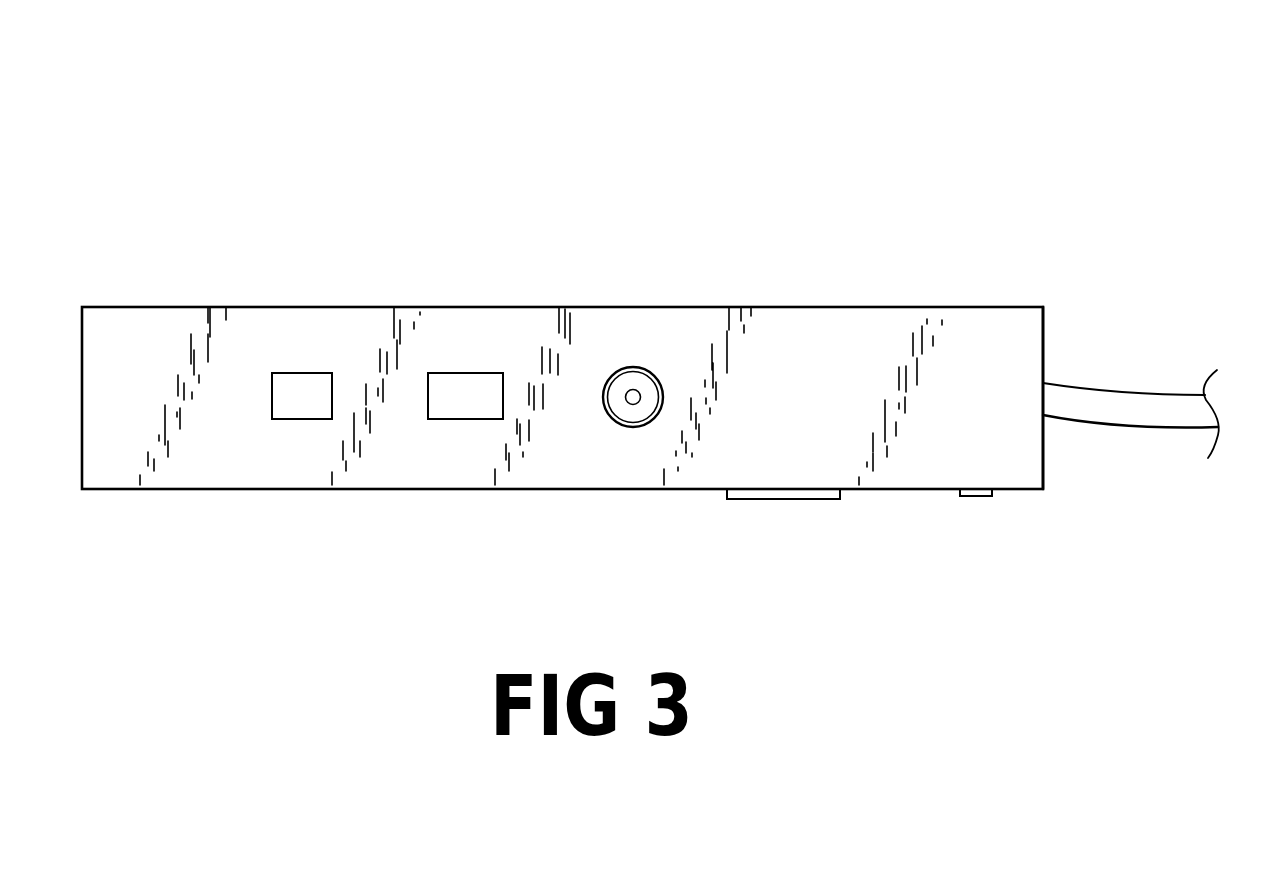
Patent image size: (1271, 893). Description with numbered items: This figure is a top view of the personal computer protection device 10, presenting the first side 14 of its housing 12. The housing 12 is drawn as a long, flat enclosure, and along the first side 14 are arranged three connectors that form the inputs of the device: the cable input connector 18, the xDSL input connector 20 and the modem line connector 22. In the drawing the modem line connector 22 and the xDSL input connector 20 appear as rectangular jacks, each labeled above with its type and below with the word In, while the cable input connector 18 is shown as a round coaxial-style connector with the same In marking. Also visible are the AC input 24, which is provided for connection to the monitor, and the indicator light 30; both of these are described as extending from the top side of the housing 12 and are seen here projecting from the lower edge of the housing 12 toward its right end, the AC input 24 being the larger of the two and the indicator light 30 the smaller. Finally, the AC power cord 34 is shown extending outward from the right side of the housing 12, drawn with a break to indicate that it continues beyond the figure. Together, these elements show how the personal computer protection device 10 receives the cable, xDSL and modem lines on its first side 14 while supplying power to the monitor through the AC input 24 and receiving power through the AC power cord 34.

The personal computer protection device 10 is at (1100, 247).
The housing 12 is at (785, 307).
The first side 14 is at (980, 353).
The cable input connector 18 is at (608, 413).
The xDSL input connector 20 is at (450, 403).
The modem line connector 22 is at (288, 407).
The AC input 24 is at (810, 499).
The indicator light 30 is at (980, 496).
The AC power cord 34 is at (1117, 392).